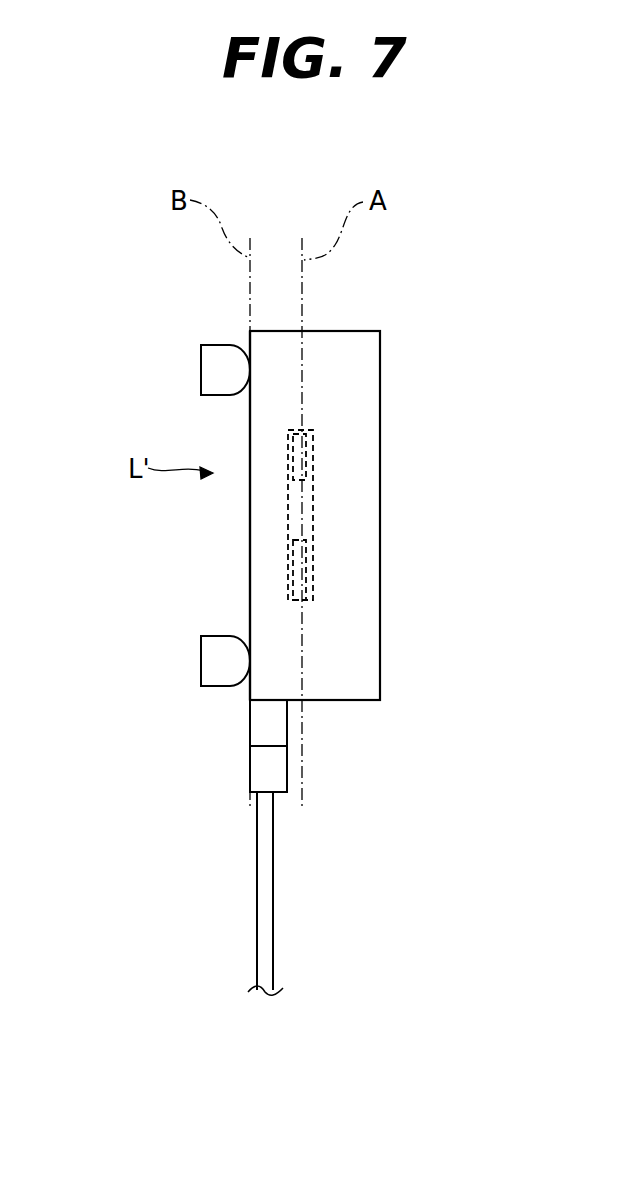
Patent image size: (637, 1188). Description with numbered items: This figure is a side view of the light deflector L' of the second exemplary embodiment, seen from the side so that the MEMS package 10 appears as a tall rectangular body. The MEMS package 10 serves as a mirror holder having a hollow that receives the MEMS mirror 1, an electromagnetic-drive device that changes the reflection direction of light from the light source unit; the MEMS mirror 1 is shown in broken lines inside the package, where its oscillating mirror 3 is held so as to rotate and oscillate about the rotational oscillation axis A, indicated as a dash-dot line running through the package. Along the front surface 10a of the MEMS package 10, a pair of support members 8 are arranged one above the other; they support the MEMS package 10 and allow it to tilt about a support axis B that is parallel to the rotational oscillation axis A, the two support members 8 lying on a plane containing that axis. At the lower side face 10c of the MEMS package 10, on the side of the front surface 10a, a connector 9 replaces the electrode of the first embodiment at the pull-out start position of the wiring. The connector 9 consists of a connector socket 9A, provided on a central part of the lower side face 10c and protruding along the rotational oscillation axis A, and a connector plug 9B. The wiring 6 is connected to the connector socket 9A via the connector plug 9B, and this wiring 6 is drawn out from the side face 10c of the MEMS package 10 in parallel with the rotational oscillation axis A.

The MEMS mirror 1 is at (328, 462).
The oscillating mirror 3 is at (288, 500).
The wiring 6 is at (257, 882).
The support member 8 is at (200, 370).
The connector 9 is at (93, 792).
The connector socket 9A is at (267, 720).
The connector plug 9B is at (268, 768).
The MEMS package 10 is at (403, 539).
The front surface 10a is at (248, 573).
The lower side face 10c is at (318, 700).